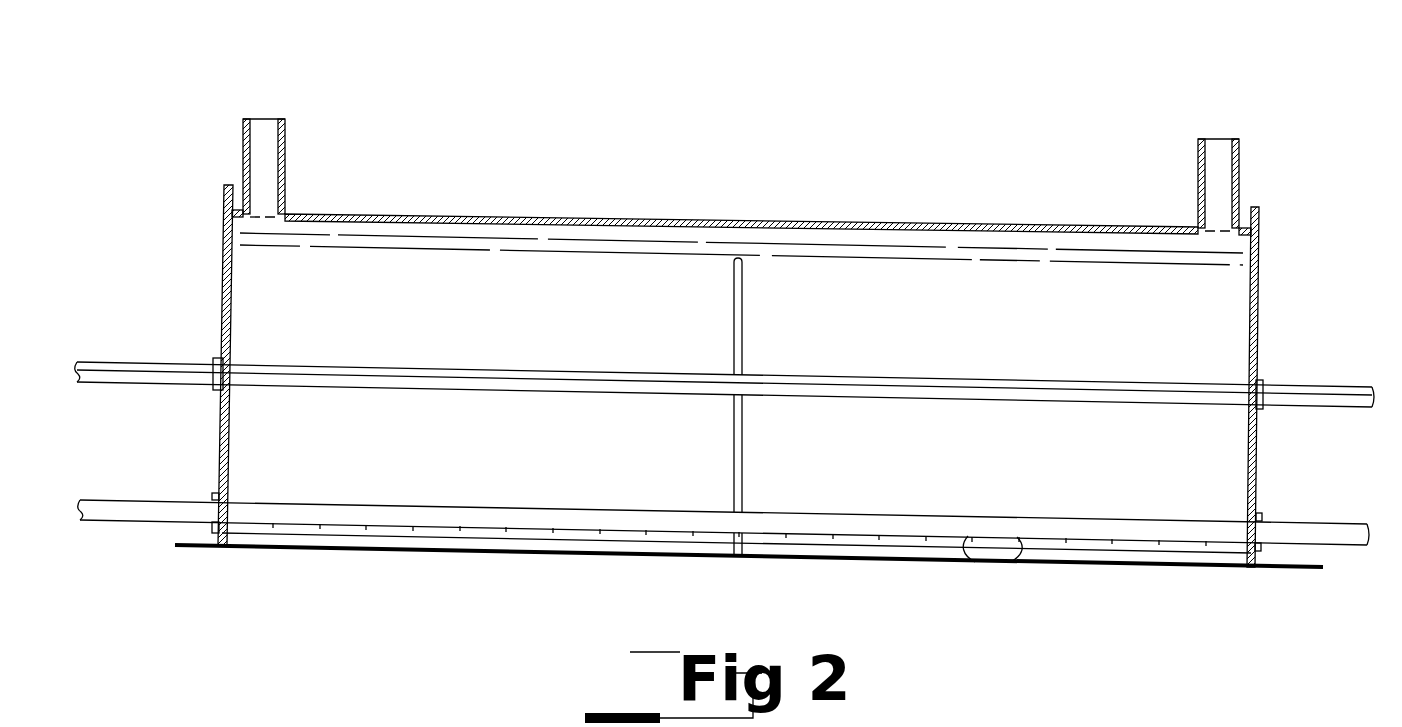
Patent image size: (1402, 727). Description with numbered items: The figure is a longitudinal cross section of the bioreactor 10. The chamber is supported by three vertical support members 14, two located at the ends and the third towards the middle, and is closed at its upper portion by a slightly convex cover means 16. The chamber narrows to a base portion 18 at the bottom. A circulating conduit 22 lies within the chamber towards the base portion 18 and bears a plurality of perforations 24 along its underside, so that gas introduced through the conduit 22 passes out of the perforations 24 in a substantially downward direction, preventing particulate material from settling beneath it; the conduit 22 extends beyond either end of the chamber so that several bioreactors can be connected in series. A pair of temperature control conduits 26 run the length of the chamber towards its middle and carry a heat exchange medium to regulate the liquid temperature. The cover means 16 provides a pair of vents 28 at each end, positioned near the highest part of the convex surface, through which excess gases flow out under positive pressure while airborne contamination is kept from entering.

The bioreactor 10 is at (697, 178).
The vertical support members 14 is at (222, 272).
The cover means 16 is at (938, 223).
The base portion 18 is at (542, 553).
The conduit 22 is at (1368, 547).
The perforations 24 is at (1010, 562).
The conduits 26 is at (1375, 400).
The vents 28 is at (287, 145).